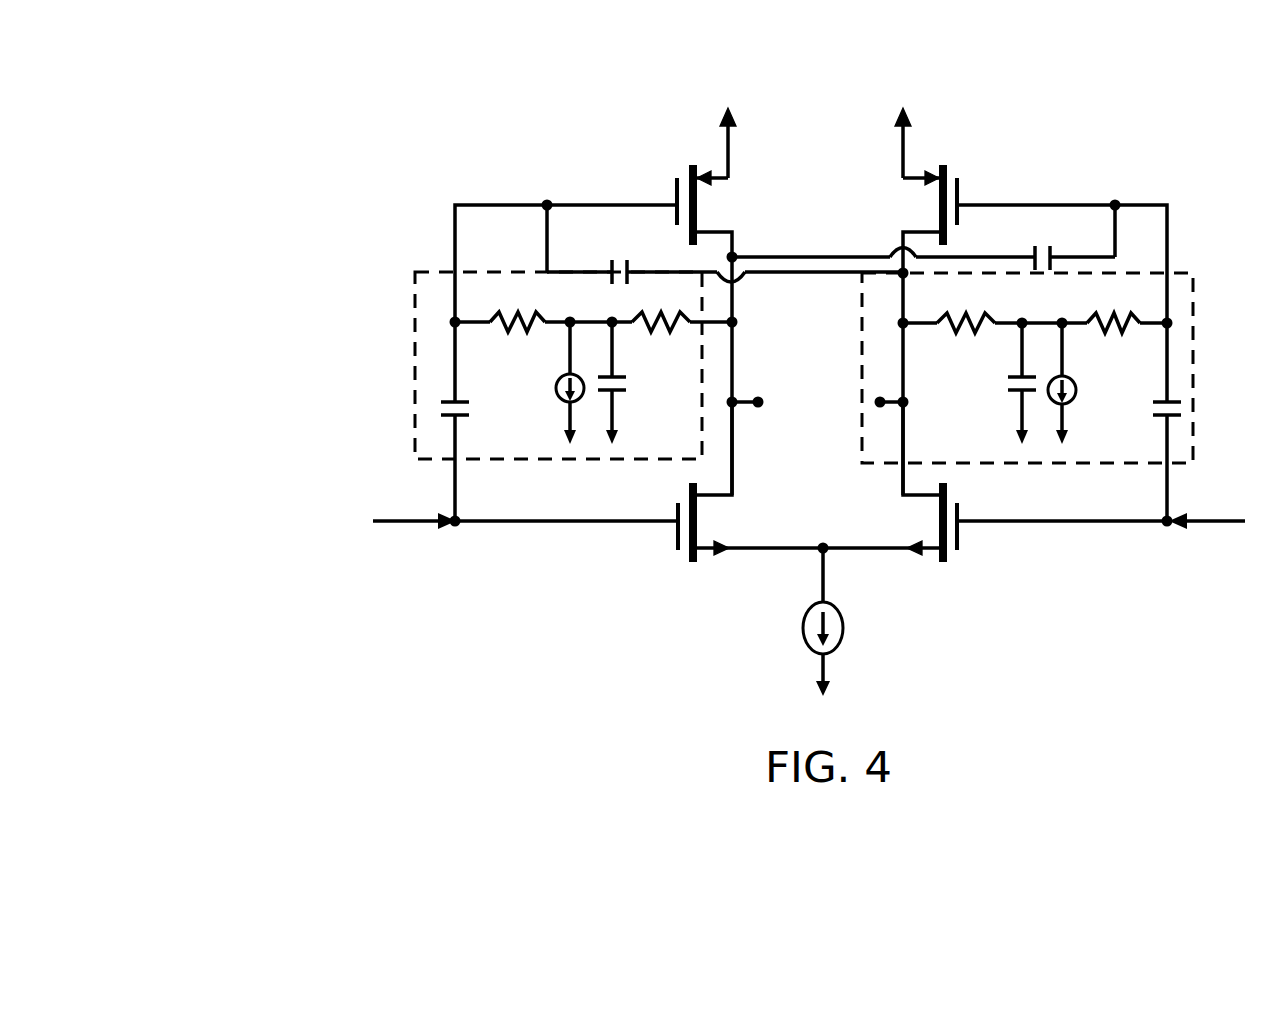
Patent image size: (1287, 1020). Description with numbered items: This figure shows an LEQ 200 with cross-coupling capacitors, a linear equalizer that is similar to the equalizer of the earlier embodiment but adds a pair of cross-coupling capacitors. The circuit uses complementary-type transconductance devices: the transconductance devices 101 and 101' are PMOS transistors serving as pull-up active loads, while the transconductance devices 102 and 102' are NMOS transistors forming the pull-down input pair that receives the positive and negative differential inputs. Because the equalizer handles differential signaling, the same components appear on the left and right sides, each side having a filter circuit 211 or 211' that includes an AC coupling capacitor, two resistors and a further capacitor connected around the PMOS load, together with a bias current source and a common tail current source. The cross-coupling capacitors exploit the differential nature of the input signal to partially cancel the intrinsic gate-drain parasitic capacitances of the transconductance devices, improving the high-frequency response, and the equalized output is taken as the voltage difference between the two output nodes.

The LEQ 200 is at (827, 67).
The transconductance device 101 is at (735, 182).
The transconductance device 101' is at (887, 190).
The transconductance device 102 is at (736, 482).
The transconductance device 102' is at (886, 482).
The filter circuit 211 is at (444, 365).
The filter circuit (complementary side) 211' is at (1070, 368).